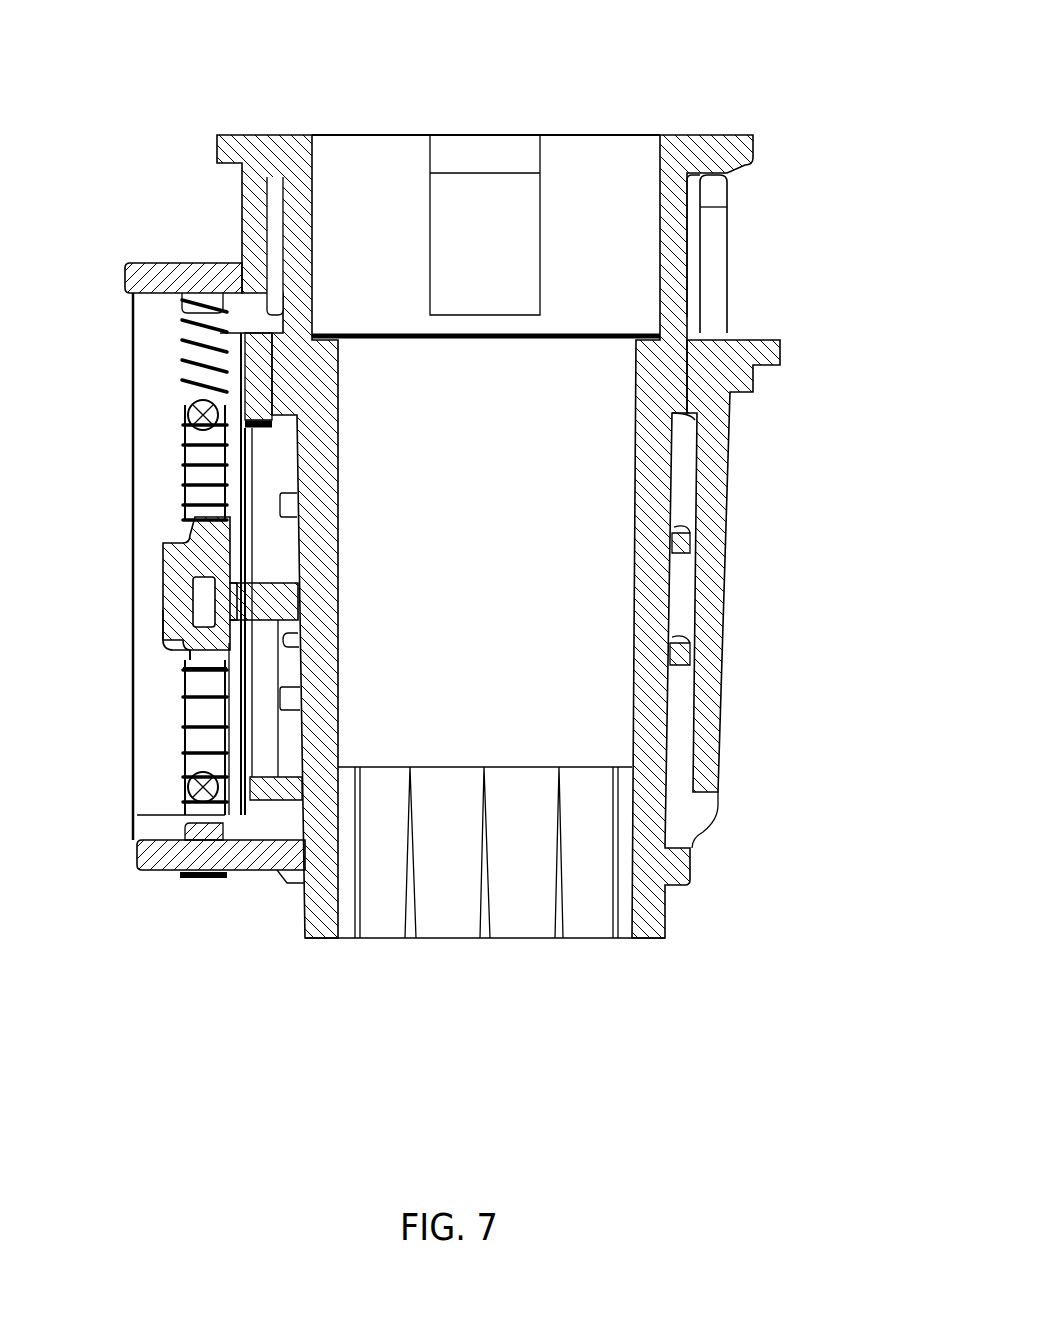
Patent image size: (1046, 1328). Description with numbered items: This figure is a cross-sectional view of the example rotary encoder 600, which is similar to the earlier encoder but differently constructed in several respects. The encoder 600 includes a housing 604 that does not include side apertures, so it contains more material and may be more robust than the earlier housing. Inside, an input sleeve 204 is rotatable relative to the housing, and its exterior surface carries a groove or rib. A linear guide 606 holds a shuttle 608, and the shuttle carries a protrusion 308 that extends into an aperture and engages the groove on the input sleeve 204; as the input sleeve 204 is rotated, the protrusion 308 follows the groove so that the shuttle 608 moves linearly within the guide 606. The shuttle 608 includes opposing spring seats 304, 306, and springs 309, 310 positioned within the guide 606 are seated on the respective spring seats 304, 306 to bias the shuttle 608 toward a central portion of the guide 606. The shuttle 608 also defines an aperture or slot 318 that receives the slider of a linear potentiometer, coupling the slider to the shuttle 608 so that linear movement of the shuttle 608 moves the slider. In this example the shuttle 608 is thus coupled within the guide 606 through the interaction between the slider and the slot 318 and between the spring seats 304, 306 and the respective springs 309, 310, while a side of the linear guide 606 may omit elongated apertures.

The rotary encoder 600 is at (808, 56).
The input sleeve 204 is at (740, 150).
The housing 604 is at (712, 542).
The linear guide 606 is at (163, 430).
The spring seat 304 is at (192, 530).
The protrusion 308 is at (287, 585).
The slot 318 is at (197, 607).
The shuttle 608 is at (175, 615).
The spring 309 is at (187, 380).
The spring seat 306 is at (193, 650).
The spring 310 is at (187, 752).